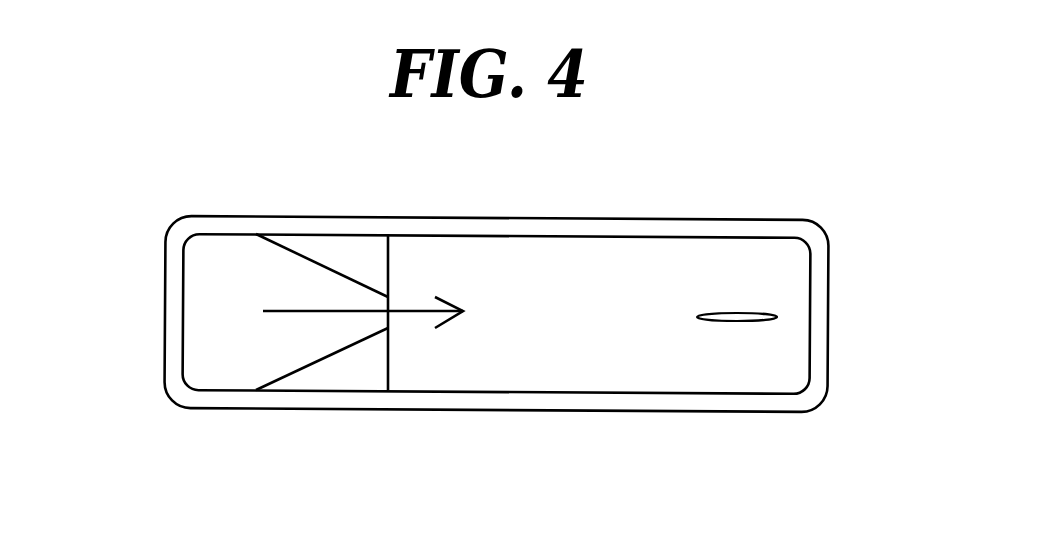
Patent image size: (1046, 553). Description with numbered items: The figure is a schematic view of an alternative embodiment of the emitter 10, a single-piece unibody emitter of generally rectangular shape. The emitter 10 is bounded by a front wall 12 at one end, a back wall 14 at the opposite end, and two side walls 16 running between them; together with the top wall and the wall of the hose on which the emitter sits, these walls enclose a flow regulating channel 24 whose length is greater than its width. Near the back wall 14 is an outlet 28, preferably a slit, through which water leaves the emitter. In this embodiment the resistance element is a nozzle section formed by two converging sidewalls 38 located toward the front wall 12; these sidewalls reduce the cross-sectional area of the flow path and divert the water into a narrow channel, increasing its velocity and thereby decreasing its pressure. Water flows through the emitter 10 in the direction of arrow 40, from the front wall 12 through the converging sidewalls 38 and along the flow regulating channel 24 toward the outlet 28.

The emitter 10 is at (647, 123).
The front wall 12 is at (173, 318).
The back wall 14 is at (817, 325).
The side walls 16 is at (500, 232).
The flow regulating channel 24 is at (657, 342).
The outlet 28 is at (744, 312).
The converging sidewalls 38 is at (342, 257).
The arrow 40 is at (417, 313).